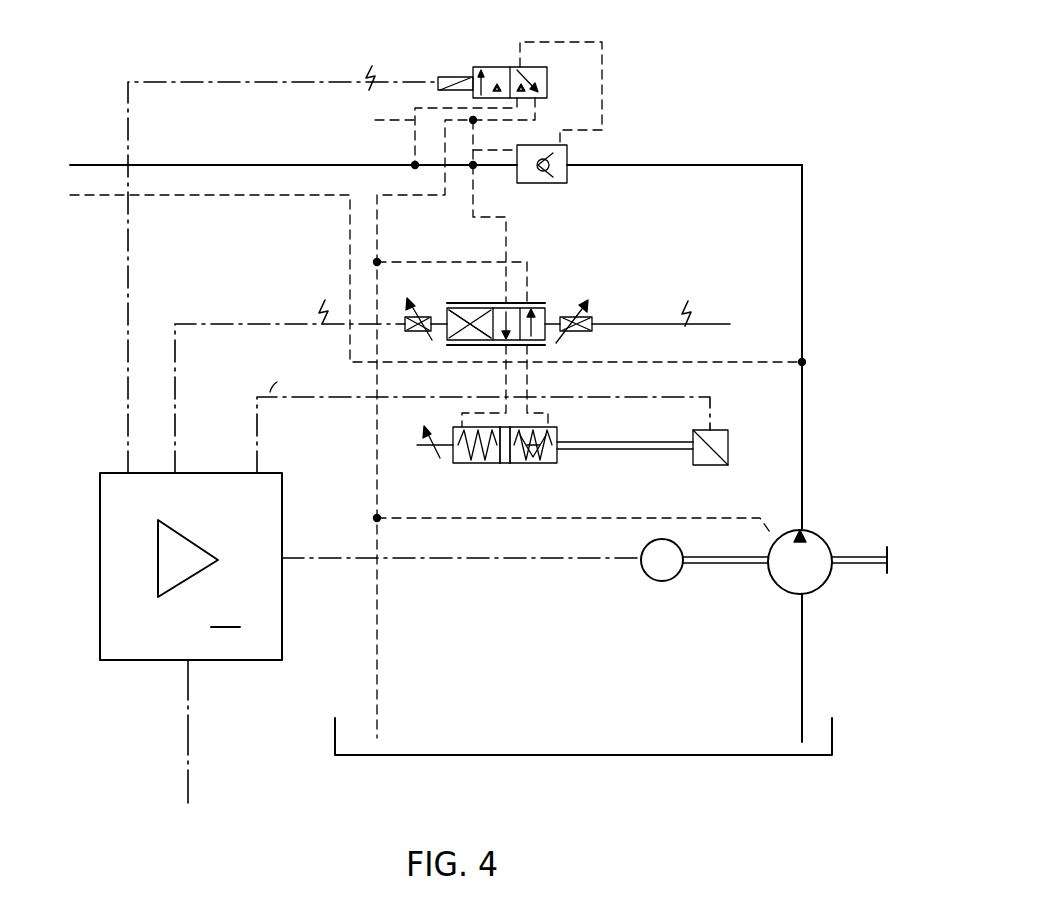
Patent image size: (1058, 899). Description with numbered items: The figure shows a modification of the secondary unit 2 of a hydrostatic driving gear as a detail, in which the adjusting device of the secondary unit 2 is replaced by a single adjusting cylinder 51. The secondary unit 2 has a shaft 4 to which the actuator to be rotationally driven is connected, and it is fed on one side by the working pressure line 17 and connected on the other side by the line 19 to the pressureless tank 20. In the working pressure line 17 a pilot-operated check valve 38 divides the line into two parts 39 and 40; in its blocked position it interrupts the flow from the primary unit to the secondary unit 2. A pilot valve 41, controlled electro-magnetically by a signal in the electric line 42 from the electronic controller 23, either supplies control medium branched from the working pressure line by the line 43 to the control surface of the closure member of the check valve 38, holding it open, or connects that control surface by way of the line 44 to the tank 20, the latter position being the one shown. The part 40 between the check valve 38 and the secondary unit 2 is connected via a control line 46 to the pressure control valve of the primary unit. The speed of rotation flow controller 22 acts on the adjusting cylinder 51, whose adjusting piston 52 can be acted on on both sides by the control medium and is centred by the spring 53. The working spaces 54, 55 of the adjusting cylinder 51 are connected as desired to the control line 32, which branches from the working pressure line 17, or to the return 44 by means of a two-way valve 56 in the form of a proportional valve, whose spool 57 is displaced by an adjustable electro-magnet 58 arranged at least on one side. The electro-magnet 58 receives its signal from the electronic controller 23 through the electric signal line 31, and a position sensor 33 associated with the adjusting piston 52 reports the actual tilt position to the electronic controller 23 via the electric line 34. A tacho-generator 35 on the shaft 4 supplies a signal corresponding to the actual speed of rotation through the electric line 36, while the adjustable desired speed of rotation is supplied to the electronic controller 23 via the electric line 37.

The secondary unit 2 is at (783, 575).
The shaft 4 is at (858, 557).
The working pressure line 17 is at (92, 163).
The line 19 is at (801, 669).
The tank 20 is at (680, 756).
The speed of rotation flow controller 22 is at (546, 289).
The electronic controller 23 is at (191, 566).
The electric line 31 is at (272, 322).
The control line 32 is at (508, 223).
The position sensor 33 is at (730, 448).
The electric line 34 is at (257, 418).
The tacho-generator 35 is at (648, 580).
The electric line 36 is at (327, 555).
The electric line 37 is at (189, 715).
The pilot-operated check valve 38 is at (562, 152).
The part of working pressure line 39 is at (243, 163).
The part of working pressure line 40 is at (754, 163).
The pilot valve 41 is at (492, 67).
The electric line 42 is at (270, 80).
The line 43 is at (372, 120).
The line 44 is at (377, 492).
The control line 46 is at (245, 203).
The adjusting cylinder 51 is at (565, 427).
The adjusting piston 52 is at (503, 465).
The spring 53 is at (470, 465).
The working space 54 is at (450, 462).
The working space 55 is at (530, 465).
The two-way valve 56 is at (565, 338).
The spool 57 is at (462, 345).
The electro-magnet 58 is at (440, 320).